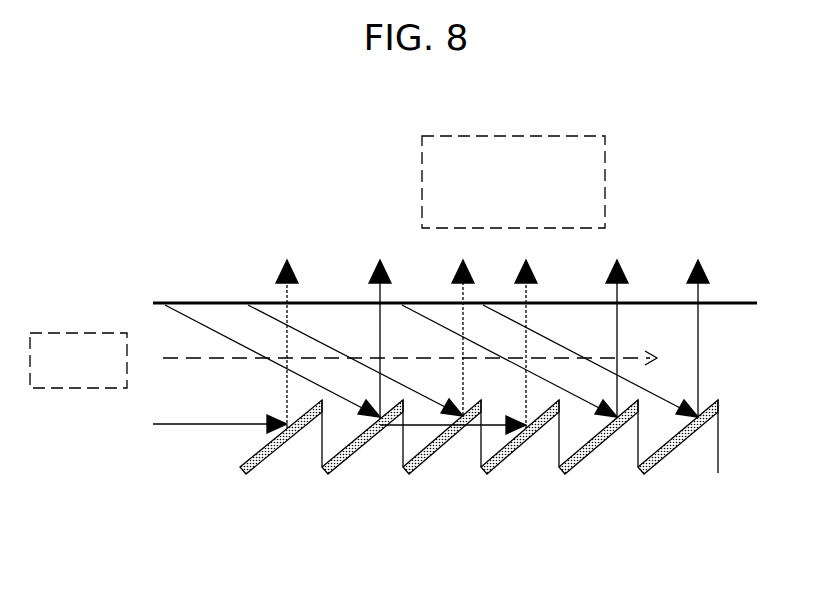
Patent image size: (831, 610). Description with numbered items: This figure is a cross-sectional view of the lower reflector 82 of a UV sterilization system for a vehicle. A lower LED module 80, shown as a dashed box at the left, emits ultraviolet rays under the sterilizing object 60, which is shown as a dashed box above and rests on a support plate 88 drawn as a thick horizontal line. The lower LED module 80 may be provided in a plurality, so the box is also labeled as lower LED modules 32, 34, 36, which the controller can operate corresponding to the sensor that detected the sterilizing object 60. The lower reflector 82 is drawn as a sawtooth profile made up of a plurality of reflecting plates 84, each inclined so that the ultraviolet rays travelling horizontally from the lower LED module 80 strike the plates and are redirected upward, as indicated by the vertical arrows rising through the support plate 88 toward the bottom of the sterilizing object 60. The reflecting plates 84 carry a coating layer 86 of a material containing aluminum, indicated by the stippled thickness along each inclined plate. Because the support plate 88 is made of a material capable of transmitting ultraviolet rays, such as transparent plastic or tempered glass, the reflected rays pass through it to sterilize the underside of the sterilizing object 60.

The sterilizing object 60 is at (605, 173).
The lower LED module 80 is at (85, 343).
The lower LED module 32 is at (85, 397).
The lower LED module 34 is at (78, 360).
The lower LED module 36 is at (83, 390).
The lower reflector 82 is at (518, 488).
The reflecting plate 84 is at (598, 456).
The coating layer 86 is at (352, 458).
The support plate 88 is at (735, 302).